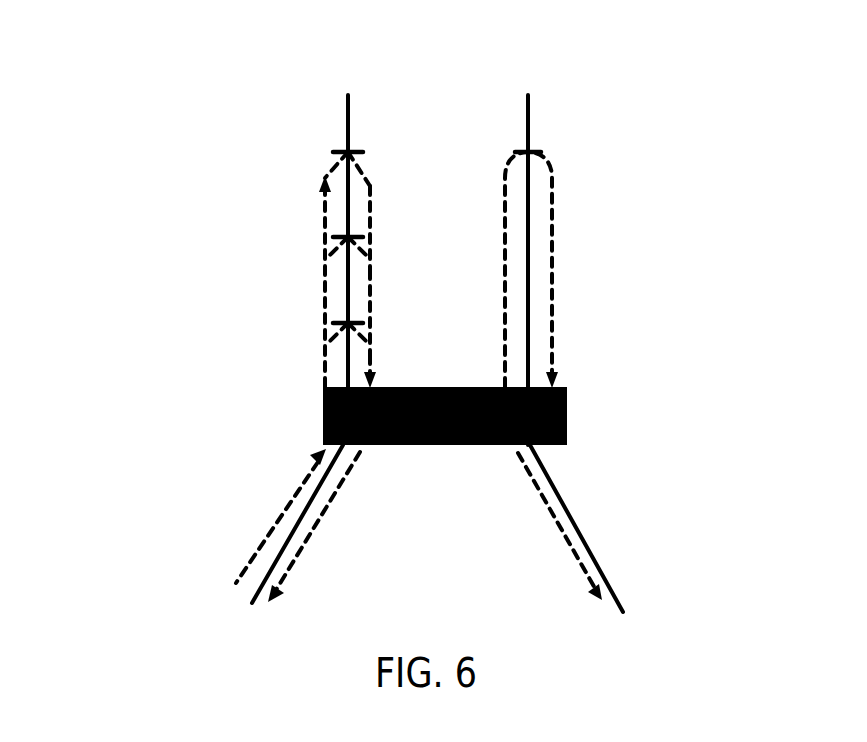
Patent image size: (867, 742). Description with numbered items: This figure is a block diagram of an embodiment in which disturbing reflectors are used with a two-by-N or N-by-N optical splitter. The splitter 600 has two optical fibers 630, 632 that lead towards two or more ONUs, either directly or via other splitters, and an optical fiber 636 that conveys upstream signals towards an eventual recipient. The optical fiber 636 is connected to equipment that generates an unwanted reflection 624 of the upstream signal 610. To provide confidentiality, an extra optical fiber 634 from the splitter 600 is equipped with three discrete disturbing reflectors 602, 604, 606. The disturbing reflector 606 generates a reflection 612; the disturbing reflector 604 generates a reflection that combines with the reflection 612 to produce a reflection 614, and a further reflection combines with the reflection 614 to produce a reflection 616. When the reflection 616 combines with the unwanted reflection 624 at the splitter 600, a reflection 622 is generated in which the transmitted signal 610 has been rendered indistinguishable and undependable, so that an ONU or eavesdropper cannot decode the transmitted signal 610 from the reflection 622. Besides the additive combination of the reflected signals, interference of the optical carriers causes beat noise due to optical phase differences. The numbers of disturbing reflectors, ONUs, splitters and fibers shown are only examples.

The splitter 600 is at (323, 427).
The disturbing reflector 602 is at (326, 336).
The disturbing reflector 604 is at (326, 250).
The disturbing reflector 606 is at (328, 164).
The upstream signal 610 is at (512, 382).
The reflection 612 is at (372, 190).
The reflection 614 is at (372, 273).
The reflection 616 is at (372, 358).
The reflection 622 is at (342, 488).
The unwanted reflection 624 is at (552, 197).
The optical fiber 630 is at (250, 605).
The optical fiber 632 is at (612, 578).
The extra optical fiber 634 is at (348, 126).
The optical fiber 636 is at (528, 128).